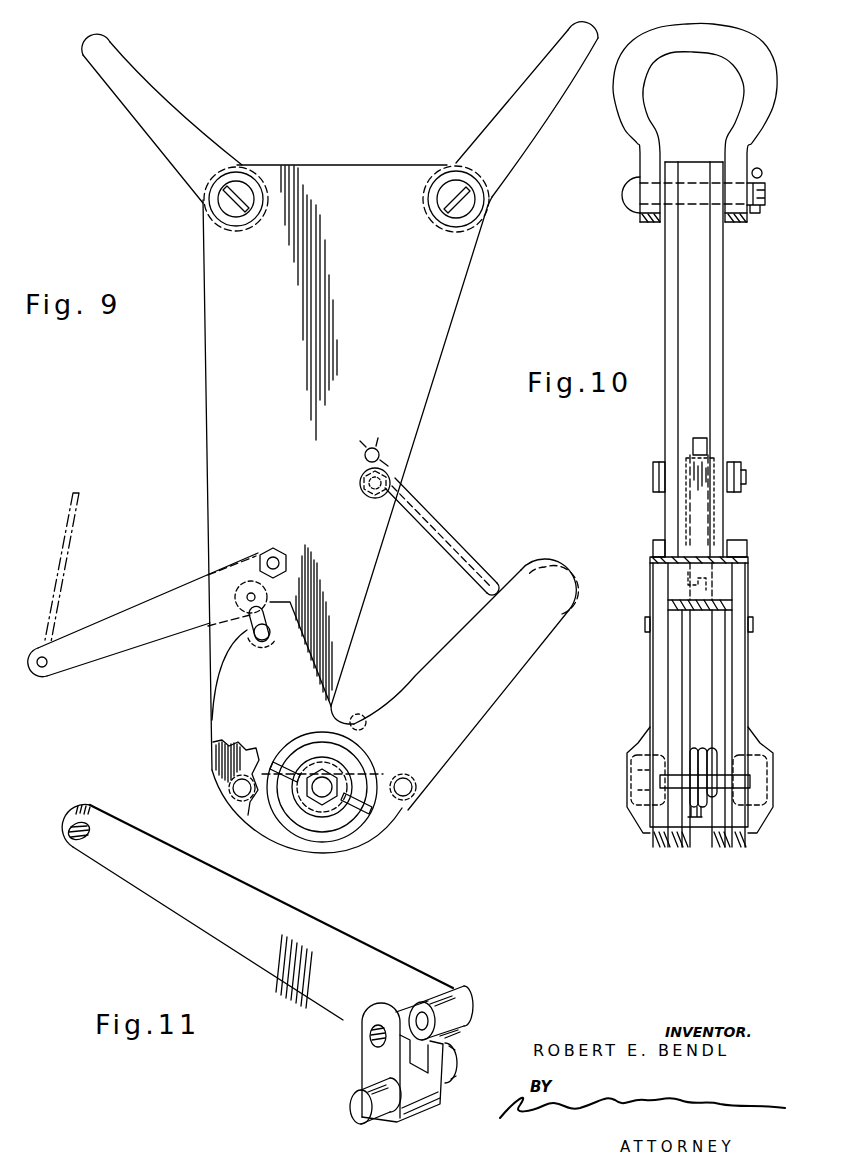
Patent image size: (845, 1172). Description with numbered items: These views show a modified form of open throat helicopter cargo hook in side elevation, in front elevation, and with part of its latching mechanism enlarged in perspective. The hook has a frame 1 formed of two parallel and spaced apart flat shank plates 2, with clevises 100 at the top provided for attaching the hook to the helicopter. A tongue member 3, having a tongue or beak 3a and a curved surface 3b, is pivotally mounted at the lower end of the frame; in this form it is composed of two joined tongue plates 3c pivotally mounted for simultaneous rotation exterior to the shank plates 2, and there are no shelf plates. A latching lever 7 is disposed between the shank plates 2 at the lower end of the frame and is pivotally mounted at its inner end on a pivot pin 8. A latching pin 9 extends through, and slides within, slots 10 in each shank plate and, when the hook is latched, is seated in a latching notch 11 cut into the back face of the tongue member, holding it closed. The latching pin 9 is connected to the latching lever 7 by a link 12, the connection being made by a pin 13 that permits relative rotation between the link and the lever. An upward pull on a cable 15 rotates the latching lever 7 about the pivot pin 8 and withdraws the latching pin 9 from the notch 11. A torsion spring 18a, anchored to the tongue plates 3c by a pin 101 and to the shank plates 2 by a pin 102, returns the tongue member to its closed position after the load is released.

In FIG. 9, the frame 1 is at (203, 335).
In FIG. 9, the shank plates 2 is at (205, 398).
In FIG. 10, the shank plates 2 is at (665, 320).
In FIG. 9, the tongue member 3 is at (407, 821).
In FIG. 9, the tongue 3a is at (535, 655).
In FIG. 9, the curved surface 3b is at (242, 632).
In FIG. 10, the tongue plates 3c is at (660, 677).
In FIG. 9, the latching lever 7 is at (133, 652).
In FIG. 11, the latching lever 7 is at (128, 885).
In FIG. 9, the pivot pin 8 is at (278, 552).
In FIG. 9, the latching pin 9 is at (259, 642).
In FIG. 11, the latching pin 9 is at (350, 1112).
In FIG. 9, the slots 10 is at (247, 630).
In FIG. 9, the latching notch 11 is at (271, 641).
In FIG. 11, the link 12 is at (362, 1064).
In FIG. 11, the pin 13 is at (372, 1037).
In FIG. 9, the cable 15 is at (53, 600).
In FIG. 10, the torsion spring 18a is at (698, 818).
In FIG. 9, the clevises 100 is at (143, 73).
In FIG. 9, the pin 101 is at (413, 785).
In FIG. 10, the pin 101 is at (665, 792).
In FIG. 9, the pin 102 is at (232, 784).